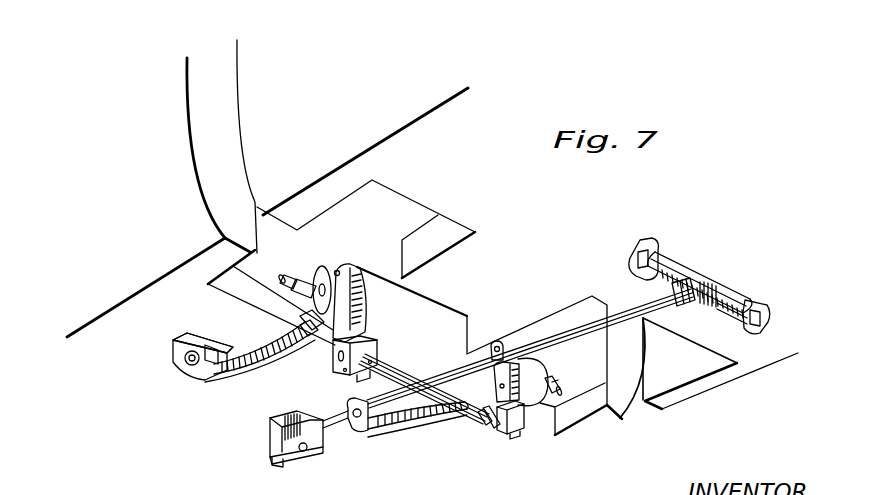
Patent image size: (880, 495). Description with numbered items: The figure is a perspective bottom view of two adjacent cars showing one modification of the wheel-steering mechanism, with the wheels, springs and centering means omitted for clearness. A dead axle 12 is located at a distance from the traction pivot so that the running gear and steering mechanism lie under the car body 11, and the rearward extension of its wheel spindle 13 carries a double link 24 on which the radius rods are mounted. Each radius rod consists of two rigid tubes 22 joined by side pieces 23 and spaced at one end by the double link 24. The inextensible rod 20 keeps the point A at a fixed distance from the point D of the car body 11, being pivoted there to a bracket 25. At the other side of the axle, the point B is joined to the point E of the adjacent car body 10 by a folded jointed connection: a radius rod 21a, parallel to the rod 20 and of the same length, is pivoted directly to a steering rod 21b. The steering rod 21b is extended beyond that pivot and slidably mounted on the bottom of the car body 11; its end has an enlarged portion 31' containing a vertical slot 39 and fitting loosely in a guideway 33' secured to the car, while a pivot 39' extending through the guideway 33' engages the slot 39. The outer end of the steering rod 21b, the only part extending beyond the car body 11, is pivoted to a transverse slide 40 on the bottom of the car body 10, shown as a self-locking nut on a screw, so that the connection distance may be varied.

The car body 10 is at (527, 261).
The car body 11 is at (201, 192).
The dead axle 12 is at (400, 372).
The wheel spindle 13 is at (296, 275).
The inextensible rod 20 is at (236, 384).
The radius rod 21a is at (423, 434).
The steering rod 21b is at (569, 332).
The rigid tubes 22 is at (310, 323).
The side pieces 23 is at (235, 357).
The double link 24 is at (340, 270).
The bracket 25 is at (195, 318).
The enlarged portion 31' is at (271, 468).
The guideway 33' is at (282, 434).
The vertical slot 39 is at (277, 476).
The pivot 39' is at (317, 469).
The transverse slide 40 is at (718, 290).
The point A is at (370, 300).
The point B is at (533, 376).
The point D is at (178, 375).
The point E is at (723, 265).